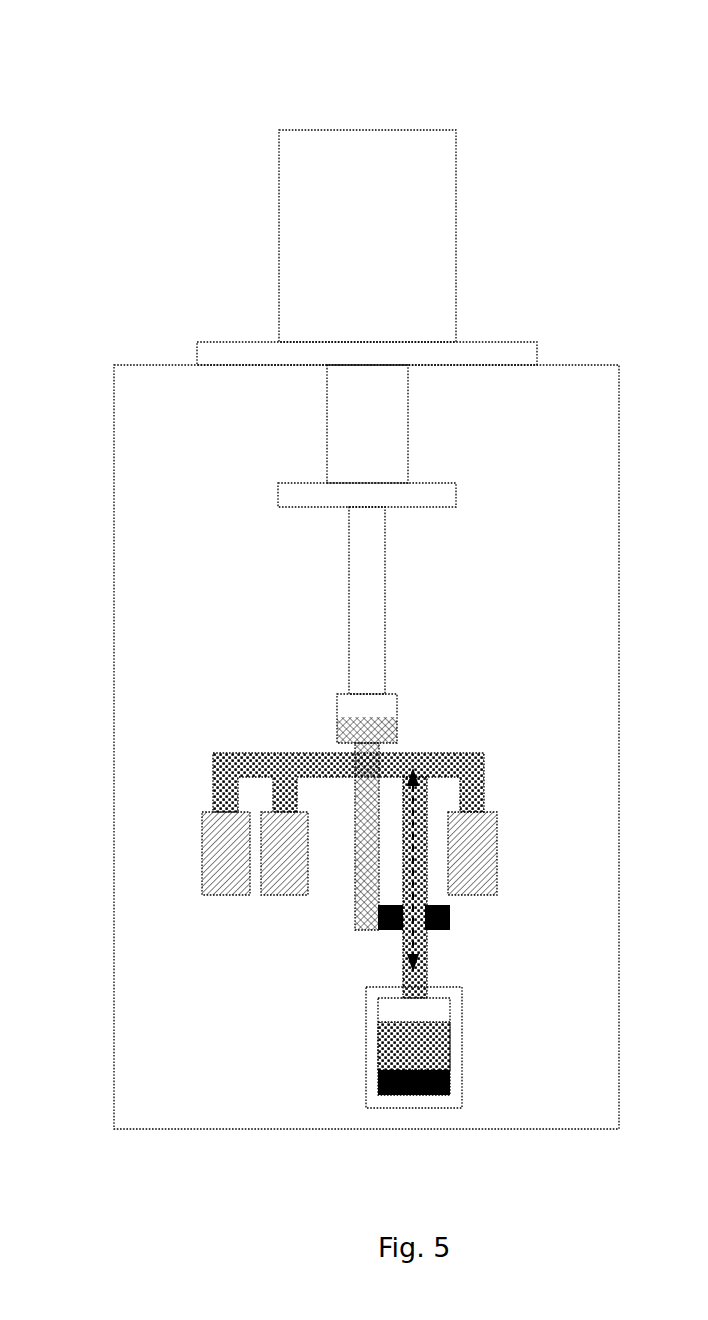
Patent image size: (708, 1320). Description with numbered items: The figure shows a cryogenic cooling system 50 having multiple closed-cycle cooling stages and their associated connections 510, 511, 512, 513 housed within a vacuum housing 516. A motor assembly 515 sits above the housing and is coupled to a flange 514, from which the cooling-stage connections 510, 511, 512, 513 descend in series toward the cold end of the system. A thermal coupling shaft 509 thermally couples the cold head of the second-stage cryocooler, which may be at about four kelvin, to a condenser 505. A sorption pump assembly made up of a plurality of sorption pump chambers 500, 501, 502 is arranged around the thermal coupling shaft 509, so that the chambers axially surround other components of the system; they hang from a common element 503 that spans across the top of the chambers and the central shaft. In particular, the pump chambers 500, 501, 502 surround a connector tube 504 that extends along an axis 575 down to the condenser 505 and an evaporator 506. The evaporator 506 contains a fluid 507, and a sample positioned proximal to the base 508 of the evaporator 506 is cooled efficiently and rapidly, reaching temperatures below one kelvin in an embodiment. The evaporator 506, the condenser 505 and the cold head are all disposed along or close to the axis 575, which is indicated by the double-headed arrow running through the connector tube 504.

The cryogenic cooling system 50 is at (127, 76).
The sorption pump chamber 500 is at (497, 893).
The sorption pump chamber 501 is at (218, 895).
The sorption pump chamber 502 is at (278, 895).
The support frame 503 is at (455, 753).
The connector tube 504 is at (427, 977).
The condenser 505 is at (451, 925).
The evaporator 506 is at (462, 1055).
The fluid 507 is at (378, 1040).
The base 508 is at (378, 1082).
The thermal coupling shaft 509 is at (355, 918).
The connection 510 is at (397, 710).
The connection 511 is at (385, 612).
The connection 512 is at (424, 508).
The connection 513 is at (408, 420).
The flange 514 is at (500, 342).
The motor assembly 515 is at (457, 283).
The vacuum housing 516 is at (619, 437).
The axis 575 is at (394, 943).